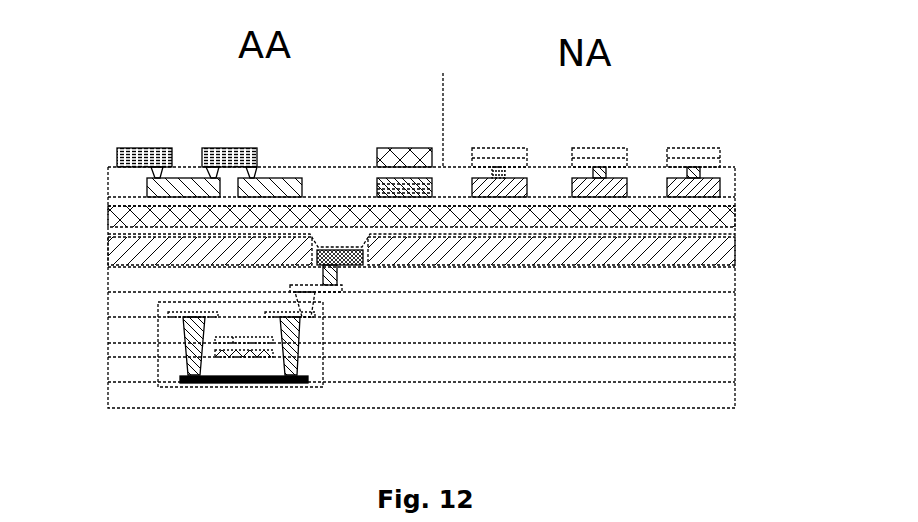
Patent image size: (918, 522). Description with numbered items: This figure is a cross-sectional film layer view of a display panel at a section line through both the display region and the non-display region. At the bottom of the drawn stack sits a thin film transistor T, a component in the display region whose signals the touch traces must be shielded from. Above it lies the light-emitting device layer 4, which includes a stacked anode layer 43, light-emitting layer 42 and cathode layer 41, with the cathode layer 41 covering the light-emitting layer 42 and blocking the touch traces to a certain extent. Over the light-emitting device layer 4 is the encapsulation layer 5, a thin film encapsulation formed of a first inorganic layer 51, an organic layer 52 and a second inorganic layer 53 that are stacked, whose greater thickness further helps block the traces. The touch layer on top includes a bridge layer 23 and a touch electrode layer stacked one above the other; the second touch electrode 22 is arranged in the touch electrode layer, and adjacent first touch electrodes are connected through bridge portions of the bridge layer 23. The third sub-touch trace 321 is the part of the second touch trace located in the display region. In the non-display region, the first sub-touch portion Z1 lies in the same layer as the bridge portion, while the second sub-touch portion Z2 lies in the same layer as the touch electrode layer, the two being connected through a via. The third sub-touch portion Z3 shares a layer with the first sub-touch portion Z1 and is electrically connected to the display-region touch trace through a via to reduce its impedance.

The second touch electrode 22 is at (155, 158).
The bridge layer 23 is at (152, 185).
The third sub-touch trace 321 is at (418, 157).
The third sub-touch portion Z3 is at (400, 187).
The second sub-touch portion Z2 is at (597, 150).
The first sub-touch portion Z1 is at (676, 195).
The encapsulation layer 5 is at (476, 218).
The first inorganic layer 51 is at (737, 199).
The organic layer 52 is at (737, 219).
The second inorganic layer 53 is at (462, 243).
The light-emitting device layer 4 is at (369, 252).
The cathode layer 41 is at (312, 243).
The light-emitting layer 42 is at (322, 256).
The anode layer 43 is at (328, 273).
The thin film transistor T is at (247, 387).